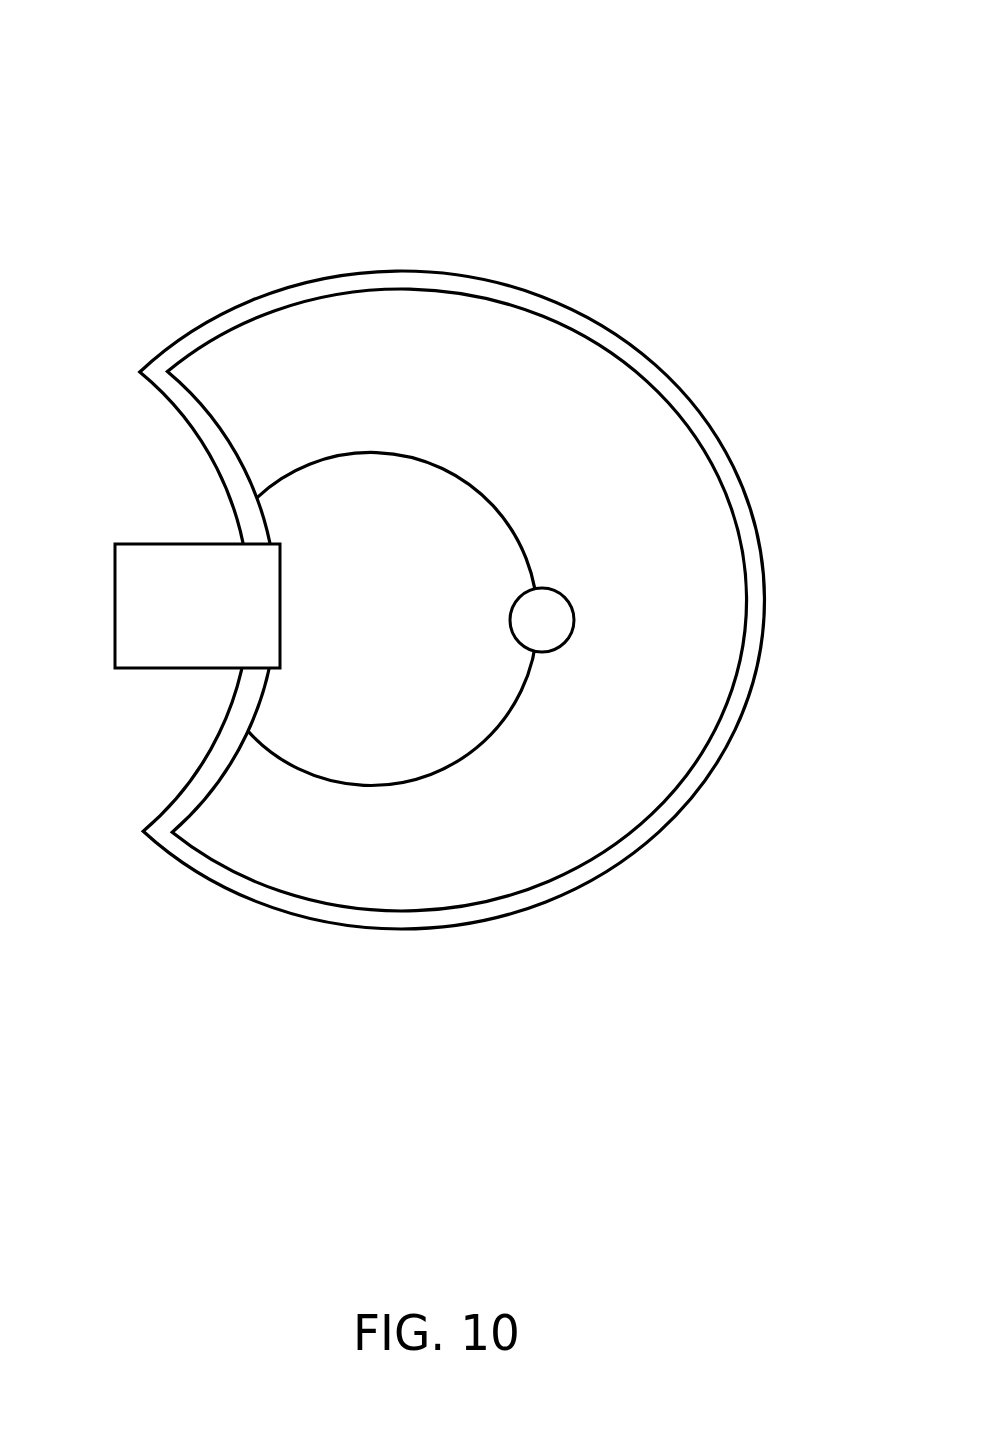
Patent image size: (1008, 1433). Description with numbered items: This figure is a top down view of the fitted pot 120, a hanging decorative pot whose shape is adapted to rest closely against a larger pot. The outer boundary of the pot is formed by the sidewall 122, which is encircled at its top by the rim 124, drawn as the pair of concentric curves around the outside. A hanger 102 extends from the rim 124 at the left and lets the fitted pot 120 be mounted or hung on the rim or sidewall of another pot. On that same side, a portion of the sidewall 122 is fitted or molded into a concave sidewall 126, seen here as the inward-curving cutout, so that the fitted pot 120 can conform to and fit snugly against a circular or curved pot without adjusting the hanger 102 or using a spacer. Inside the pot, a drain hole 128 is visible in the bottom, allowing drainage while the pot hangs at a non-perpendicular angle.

The fitted pot 120 is at (460, 592).
The hanger 102 is at (123, 543).
The sidewall 122 is at (600, 883).
The rim 124 is at (748, 538).
The concave sidewall 126 is at (222, 763).
The drain hole 128 is at (568, 621).